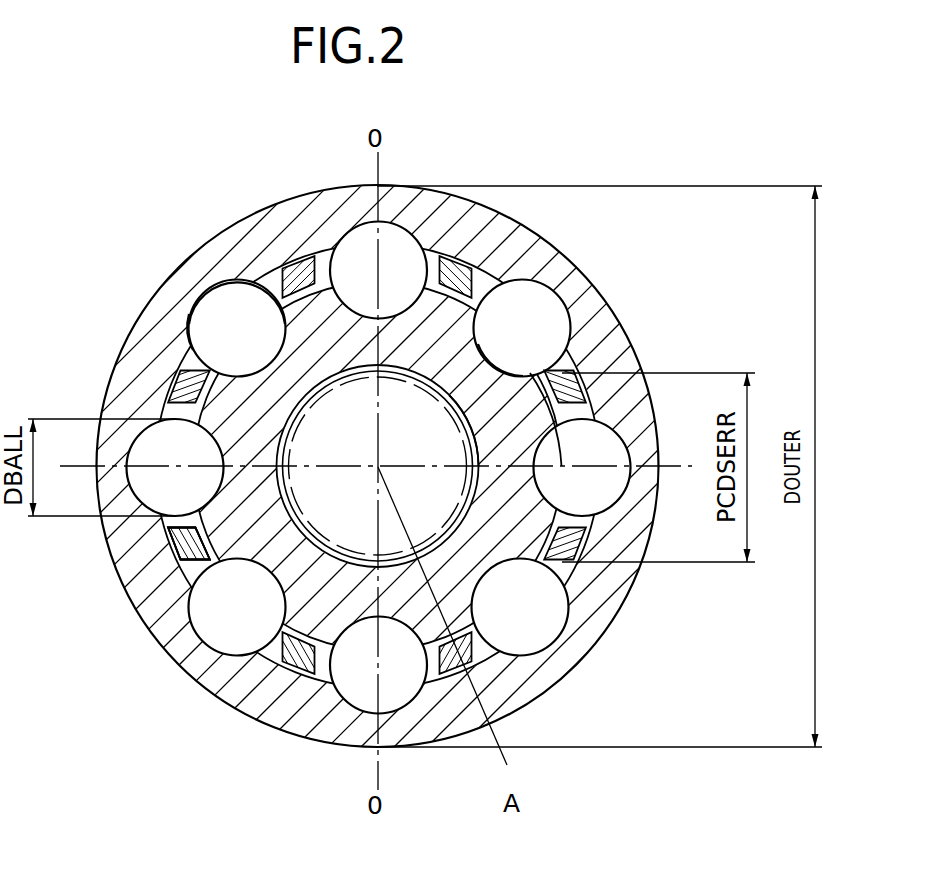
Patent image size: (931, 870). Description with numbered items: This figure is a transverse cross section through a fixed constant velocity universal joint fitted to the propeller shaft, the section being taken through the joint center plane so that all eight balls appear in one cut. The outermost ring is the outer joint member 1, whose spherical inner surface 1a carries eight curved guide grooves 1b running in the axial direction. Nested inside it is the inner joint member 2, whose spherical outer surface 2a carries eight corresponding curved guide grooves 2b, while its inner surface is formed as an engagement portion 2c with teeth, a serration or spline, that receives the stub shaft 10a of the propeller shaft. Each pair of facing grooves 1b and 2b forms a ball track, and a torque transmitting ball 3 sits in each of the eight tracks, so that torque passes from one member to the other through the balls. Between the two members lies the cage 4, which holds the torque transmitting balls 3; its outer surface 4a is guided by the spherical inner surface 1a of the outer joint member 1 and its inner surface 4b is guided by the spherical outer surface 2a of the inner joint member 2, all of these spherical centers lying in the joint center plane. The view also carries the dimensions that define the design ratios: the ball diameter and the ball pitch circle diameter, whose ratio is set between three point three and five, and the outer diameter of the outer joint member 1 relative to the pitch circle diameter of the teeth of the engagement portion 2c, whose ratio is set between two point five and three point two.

The outer joint member 1 is at (259, 205).
The spherical inner surface 1a is at (228, 282).
The curved guide groove 1b is at (205, 300).
The inner joint member 2 is at (480, 316).
The spherical outer surface 2a is at (600, 400).
The curved guide groove 2b is at (490, 322).
The engagement portion 2c is at (420, 393).
The torque transmitting ball 3 is at (352, 222).
The cage 4 is at (160, 558).
The outer surface of the cage 4a is at (167, 533).
The inner surface of the cage 4b is at (190, 533).
The stub shaft 10a is at (361, 507).